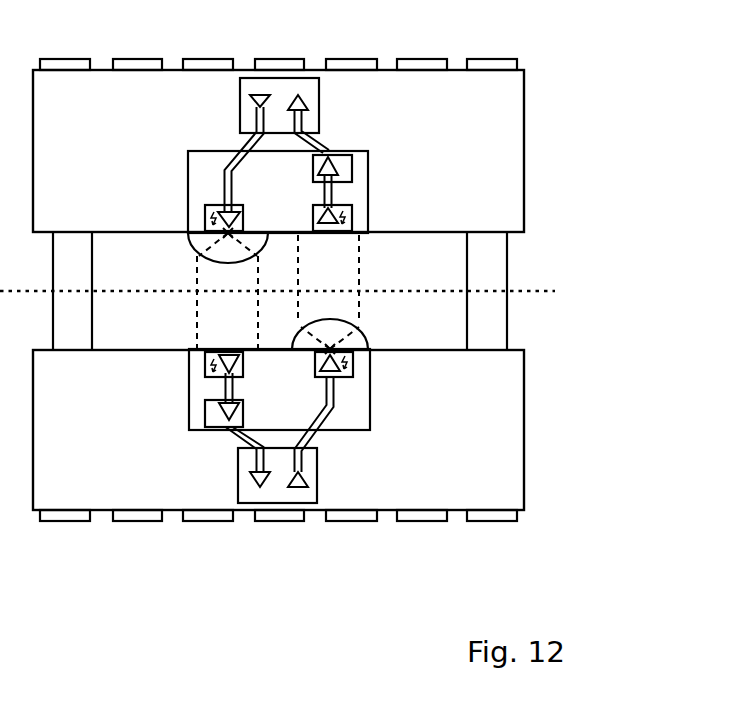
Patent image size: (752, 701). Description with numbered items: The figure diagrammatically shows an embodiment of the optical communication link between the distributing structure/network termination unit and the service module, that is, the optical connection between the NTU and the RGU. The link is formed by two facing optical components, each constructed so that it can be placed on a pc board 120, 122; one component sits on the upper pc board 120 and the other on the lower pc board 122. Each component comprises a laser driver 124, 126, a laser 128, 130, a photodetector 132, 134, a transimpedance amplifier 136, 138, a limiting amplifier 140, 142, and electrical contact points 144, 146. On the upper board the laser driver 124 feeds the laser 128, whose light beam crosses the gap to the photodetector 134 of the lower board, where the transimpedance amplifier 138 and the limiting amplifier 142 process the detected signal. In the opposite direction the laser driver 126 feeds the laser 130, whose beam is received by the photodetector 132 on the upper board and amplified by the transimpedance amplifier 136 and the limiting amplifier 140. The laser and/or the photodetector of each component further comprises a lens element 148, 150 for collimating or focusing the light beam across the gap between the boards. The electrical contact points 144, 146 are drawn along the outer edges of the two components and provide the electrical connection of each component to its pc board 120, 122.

The pc board 120 is at (525, 195).
The pc board 122 is at (525, 383).
The laser driver 124 is at (248, 102).
The laser driver 126 is at (318, 482).
The laser 128 is at (203, 213).
The laser 130 is at (353, 372).
The photodetector 132 is at (343, 225).
The photodetector 134 is at (203, 370).
The transimpedance amplifier 136 is at (352, 170).
The transimpedance amplifier 138 is at (225, 412).
The limiting amplifier 140 is at (307, 106).
The limiting amplifier 142 is at (240, 482).
The electrical contact points 144 is at (547, 75).
The electrical contact points 146 is at (545, 517).
The lens element 148 is at (223, 267).
The lens element 150 is at (322, 318).